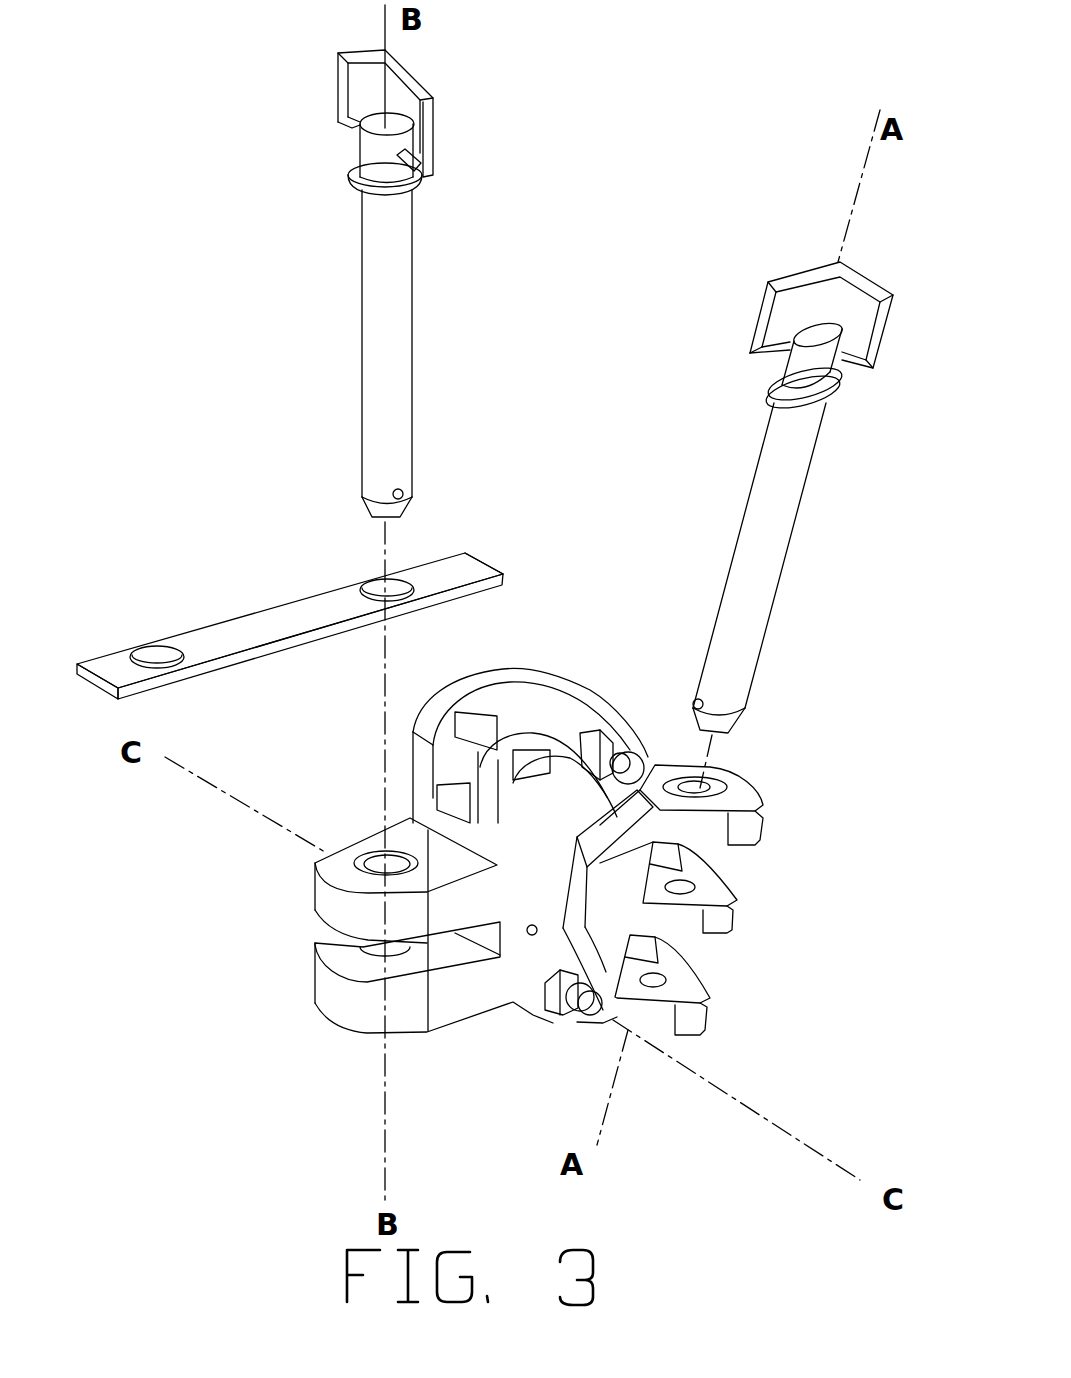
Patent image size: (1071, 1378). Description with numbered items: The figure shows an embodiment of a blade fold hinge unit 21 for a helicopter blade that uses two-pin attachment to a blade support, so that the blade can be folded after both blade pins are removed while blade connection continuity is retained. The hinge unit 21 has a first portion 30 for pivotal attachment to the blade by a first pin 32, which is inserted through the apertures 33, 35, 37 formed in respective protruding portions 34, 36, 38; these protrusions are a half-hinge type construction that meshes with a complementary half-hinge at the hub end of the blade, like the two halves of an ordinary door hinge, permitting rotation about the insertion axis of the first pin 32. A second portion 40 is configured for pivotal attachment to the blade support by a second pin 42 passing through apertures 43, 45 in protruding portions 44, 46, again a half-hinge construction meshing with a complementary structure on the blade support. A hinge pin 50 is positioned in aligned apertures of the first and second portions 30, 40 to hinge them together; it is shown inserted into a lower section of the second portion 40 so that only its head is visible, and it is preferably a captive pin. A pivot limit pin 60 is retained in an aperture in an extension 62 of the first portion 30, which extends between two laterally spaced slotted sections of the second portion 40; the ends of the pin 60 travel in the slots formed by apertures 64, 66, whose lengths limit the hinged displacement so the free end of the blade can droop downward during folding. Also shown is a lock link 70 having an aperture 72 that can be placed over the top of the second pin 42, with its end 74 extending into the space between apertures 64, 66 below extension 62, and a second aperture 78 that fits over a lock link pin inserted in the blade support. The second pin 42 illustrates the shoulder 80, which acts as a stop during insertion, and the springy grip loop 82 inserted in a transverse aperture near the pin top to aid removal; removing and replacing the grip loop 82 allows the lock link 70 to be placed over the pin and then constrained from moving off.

The blade fold hinge unit 21 is at (355, 797).
The first portion 30 is at (751, 904).
The first pin 32 is at (802, 497).
The aperture 33 is at (780, 753).
The protruding portion 34 is at (771, 805).
The aperture 35 is at (783, 862).
The protruding portion 36 is at (772, 887).
The aperture 37 is at (740, 956).
The protruding portion 38 is at (745, 1002).
The second portion 40 is at (419, 995).
The second pin 42 is at (305, 353).
The aperture 43 is at (308, 845).
The protruding portion 44 is at (341, 889).
The aperture 45 is at (322, 1012).
The protruding portion 46 is at (369, 981).
The hinge pin 50 is at (543, 1036).
The pivot limit pin 60 is at (563, 676).
The extension 62 is at (646, 656).
The aperture 64 is at (558, 698).
The aperture 66 is at (480, 679).
The lock link 70 is at (327, 549).
The aperture 72 is at (484, 491).
The end 74 is at (530, 523).
The aperture 78 is at (115, 600).
The shoulder 80 is at (306, 173).
The grip loop 82 is at (311, 107).